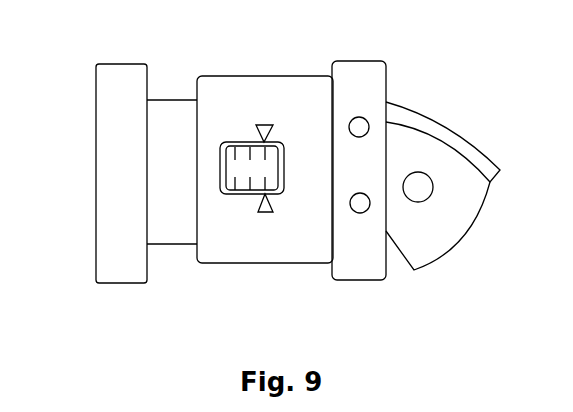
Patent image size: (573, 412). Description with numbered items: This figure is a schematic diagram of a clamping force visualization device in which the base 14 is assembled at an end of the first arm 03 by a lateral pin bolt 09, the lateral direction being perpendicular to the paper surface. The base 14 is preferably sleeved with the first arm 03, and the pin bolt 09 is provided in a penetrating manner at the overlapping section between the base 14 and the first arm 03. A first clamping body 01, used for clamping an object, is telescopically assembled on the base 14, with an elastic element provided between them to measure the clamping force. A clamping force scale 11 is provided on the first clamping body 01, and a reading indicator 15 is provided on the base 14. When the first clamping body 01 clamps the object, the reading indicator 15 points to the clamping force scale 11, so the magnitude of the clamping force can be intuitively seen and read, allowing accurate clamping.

The first clamping body 01 is at (96, 155).
The base 14 is at (224, 112).
The pin bolt 09 is at (360, 203).
The first arm 03 is at (425, 126).
The clamping force scale 11 is at (243, 196).
The reading indicator 15 is at (268, 214).